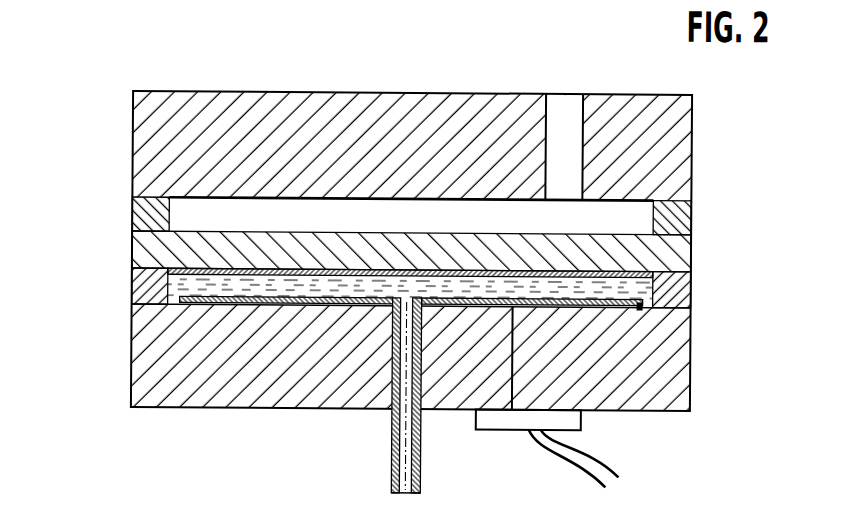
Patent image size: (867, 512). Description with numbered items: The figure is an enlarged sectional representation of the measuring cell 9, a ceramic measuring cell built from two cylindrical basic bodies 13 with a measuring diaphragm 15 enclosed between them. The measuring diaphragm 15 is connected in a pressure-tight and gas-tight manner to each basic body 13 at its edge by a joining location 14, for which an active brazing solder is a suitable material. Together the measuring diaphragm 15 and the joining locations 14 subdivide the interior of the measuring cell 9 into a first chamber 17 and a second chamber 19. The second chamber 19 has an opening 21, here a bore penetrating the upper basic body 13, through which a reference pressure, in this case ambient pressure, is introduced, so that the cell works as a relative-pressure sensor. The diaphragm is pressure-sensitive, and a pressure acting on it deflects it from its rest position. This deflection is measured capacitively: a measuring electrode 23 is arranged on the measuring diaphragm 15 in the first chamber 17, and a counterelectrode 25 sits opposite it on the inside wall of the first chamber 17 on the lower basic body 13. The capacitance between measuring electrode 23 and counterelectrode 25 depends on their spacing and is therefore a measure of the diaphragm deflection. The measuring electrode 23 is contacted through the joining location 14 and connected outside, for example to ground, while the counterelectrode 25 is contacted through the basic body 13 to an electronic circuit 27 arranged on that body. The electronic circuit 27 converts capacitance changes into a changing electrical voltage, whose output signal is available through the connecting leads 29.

The measuring cell 9 is at (106, 121).
The basic body 13 is at (287, 111).
The joining location 14 is at (680, 213).
The measuring diaphragm 15 is at (680, 246).
The first chamber 17 is at (133, 282).
The second chamber 19 is at (185, 206).
The opening 21 is at (565, 115).
The measuring electrode 23 is at (132, 253).
The counterelectrode 25 is at (615, 300).
The electronic circuit 27 is at (515, 415).
The connecting leads 29 is at (620, 464).